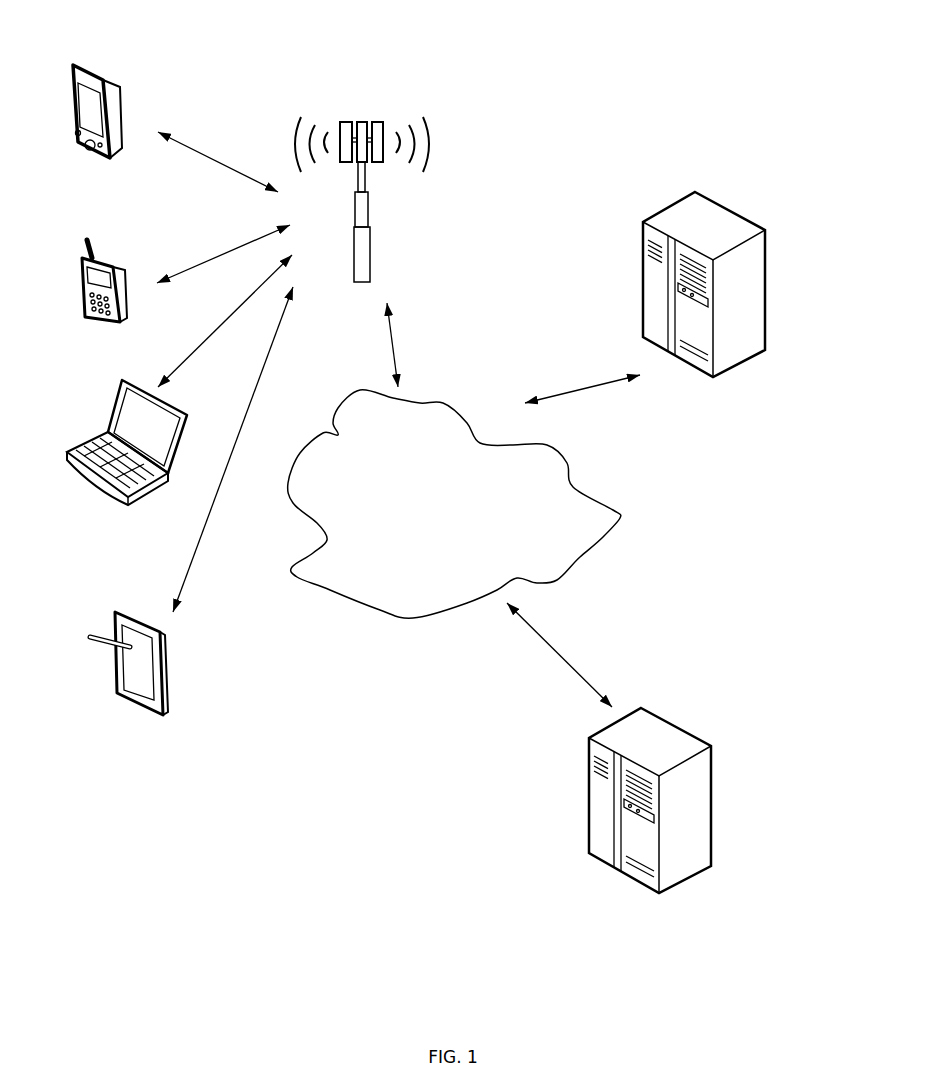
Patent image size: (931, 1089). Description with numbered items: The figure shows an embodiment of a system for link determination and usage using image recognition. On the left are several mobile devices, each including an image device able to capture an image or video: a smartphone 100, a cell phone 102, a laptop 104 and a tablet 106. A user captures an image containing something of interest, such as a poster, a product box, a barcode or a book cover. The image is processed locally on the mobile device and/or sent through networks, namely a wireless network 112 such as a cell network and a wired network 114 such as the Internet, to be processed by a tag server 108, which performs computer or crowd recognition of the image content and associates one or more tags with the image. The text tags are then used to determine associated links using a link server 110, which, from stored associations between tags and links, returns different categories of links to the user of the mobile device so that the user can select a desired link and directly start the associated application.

The smartphone 100 is at (112, 72).
The cell phone 102 is at (120, 252).
The laptop 104 is at (147, 493).
The tablet 106 is at (165, 722).
The tag server 108 is at (727, 200).
The link server 110 is at (673, 715).
The wireless network 112 is at (352, 115).
The wired network 114 is at (430, 403).